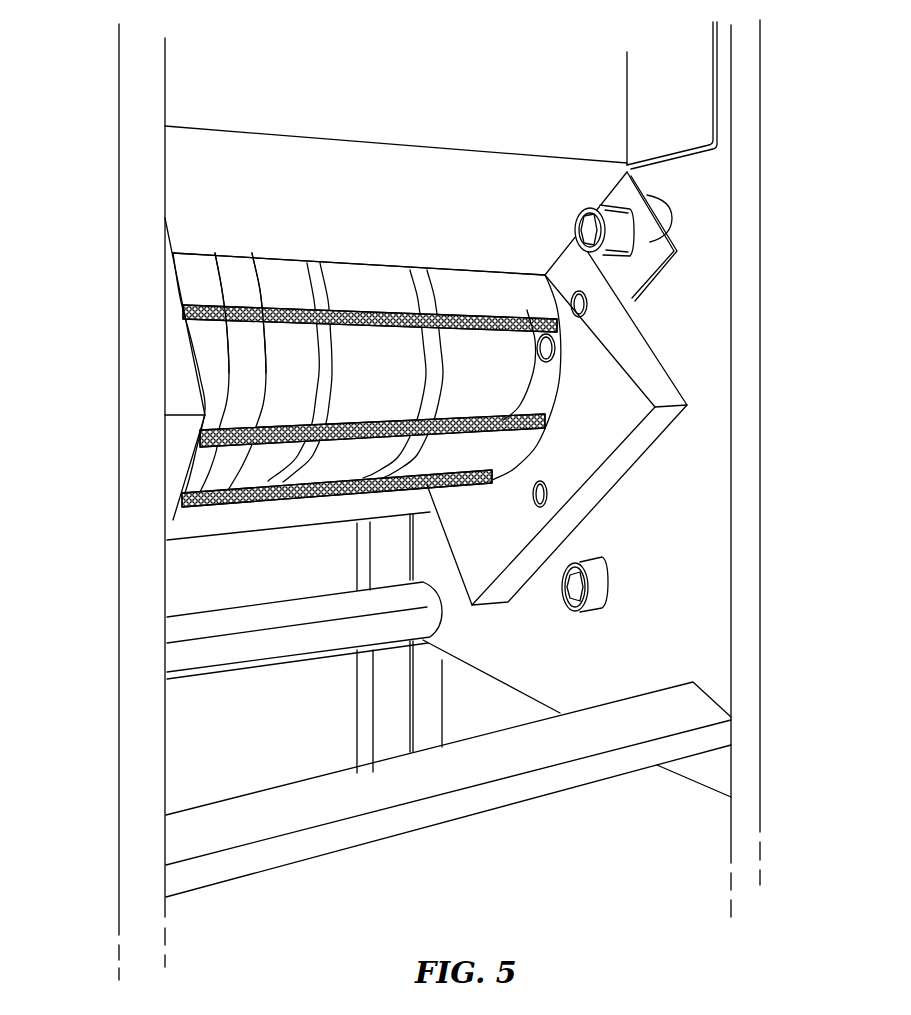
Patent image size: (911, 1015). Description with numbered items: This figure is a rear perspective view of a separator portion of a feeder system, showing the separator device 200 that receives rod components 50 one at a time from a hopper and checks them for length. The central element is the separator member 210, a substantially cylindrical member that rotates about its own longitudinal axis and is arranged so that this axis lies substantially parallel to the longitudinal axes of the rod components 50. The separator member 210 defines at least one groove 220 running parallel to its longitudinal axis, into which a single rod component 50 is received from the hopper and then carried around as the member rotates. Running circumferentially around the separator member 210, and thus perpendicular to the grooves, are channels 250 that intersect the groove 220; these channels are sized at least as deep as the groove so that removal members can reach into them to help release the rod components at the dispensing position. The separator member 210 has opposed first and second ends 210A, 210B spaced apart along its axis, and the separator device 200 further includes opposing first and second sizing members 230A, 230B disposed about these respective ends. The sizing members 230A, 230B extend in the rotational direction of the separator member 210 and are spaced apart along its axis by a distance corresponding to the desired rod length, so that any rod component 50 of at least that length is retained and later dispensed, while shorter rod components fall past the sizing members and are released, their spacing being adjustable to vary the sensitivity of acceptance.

The separator device 200 is at (107, 255).
The separator member 210 is at (370, 287).
The first end of separator member 210A is at (215, 368).
The second end of separator member 210B is at (515, 365).
The groove 220 is at (473, 283).
The channel 250 is at (313, 287).
The first sizing member 230A is at (187, 430).
The second sizing member 230B is at (615, 410).
The rod component 50 is at (560, 325).